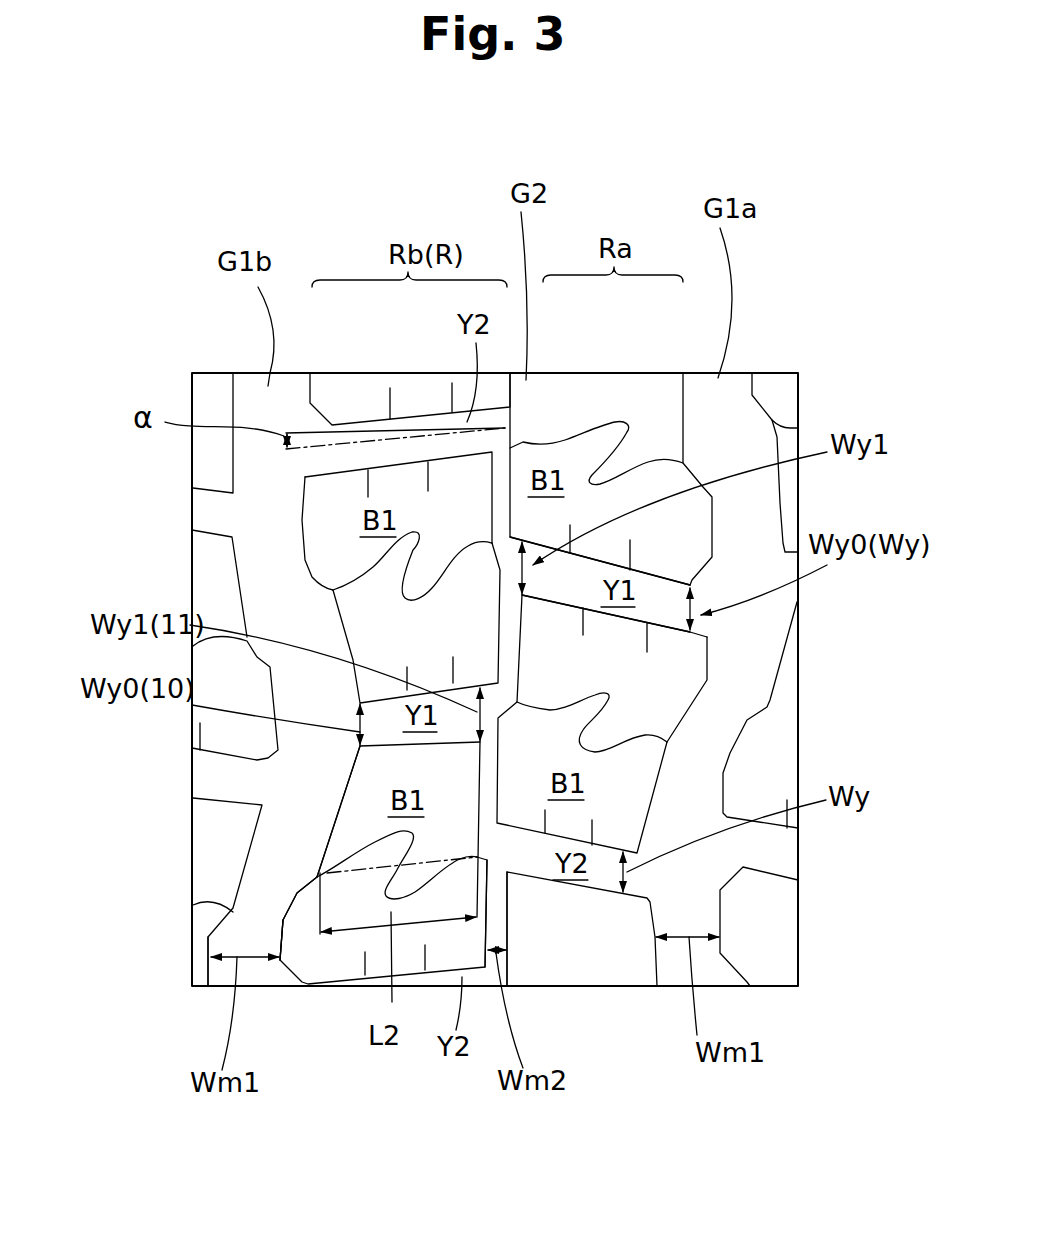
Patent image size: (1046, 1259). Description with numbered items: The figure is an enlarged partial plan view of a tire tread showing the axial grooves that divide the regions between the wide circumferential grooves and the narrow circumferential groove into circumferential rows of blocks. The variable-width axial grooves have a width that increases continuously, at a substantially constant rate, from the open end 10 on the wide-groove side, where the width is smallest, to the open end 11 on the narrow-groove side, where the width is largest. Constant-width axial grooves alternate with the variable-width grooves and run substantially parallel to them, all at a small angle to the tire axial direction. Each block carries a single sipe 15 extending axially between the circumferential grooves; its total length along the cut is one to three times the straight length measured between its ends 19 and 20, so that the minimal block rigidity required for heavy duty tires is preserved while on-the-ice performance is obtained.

The open end 10 is at (702, 614).
The open end 11 is at (522, 560).
The sipe 15 is at (315, 876).
The end of sipe 19 is at (314, 877).
The end of sipe 20 is at (490, 859).